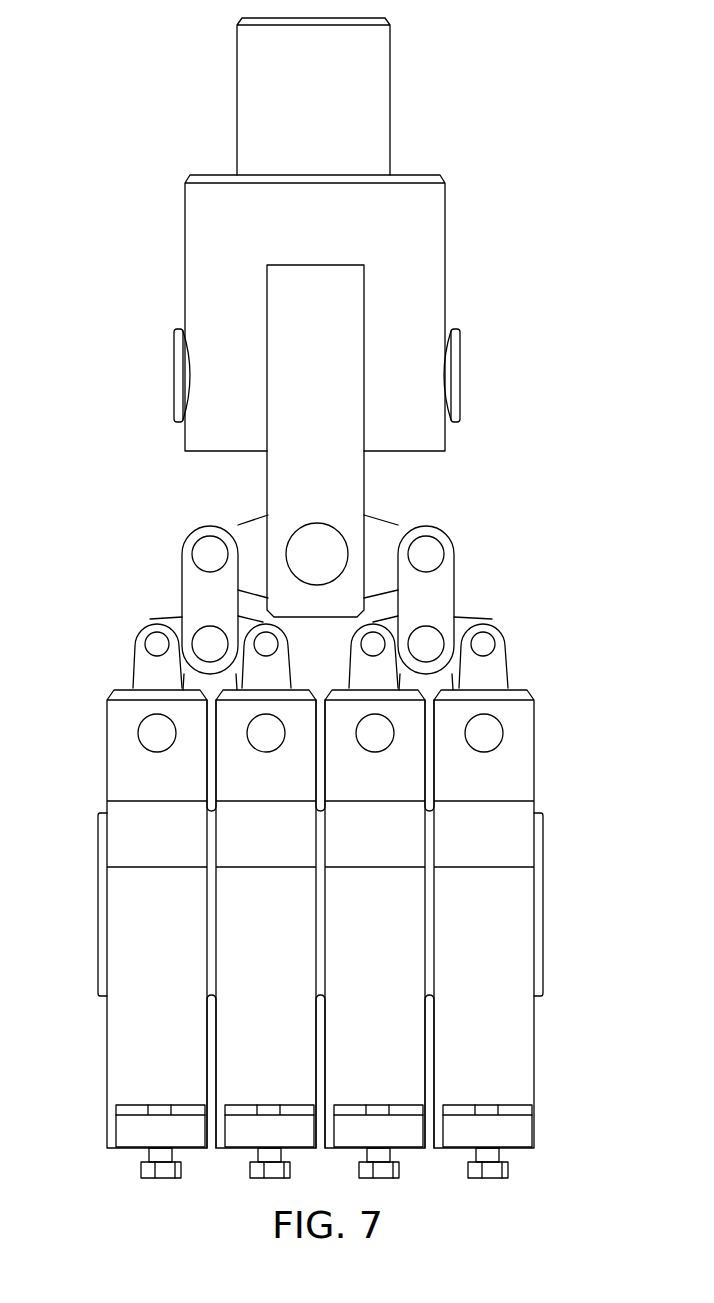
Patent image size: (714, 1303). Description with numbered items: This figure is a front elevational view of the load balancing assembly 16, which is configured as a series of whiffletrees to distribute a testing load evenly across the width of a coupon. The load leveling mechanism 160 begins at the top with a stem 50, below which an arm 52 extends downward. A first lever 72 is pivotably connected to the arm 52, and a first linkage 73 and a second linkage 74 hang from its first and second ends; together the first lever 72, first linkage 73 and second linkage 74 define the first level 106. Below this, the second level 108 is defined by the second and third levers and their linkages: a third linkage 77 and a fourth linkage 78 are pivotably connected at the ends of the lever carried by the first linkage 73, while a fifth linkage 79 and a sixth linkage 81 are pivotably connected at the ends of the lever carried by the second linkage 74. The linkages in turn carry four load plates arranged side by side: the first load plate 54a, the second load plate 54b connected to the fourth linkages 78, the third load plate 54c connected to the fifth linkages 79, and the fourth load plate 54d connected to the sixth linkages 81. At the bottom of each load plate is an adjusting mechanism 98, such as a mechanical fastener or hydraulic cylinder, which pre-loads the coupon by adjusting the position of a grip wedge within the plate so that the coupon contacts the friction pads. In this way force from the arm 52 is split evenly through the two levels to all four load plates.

The load balancing assembly 16 is at (558, 88).
The stem 50 is at (390, 98).
The arm 52 is at (366, 482).
The first lever 72 is at (246, 528).
The first linkage 73 is at (188, 590).
The second linkage 74 is at (446, 588).
The third linkage 77 is at (143, 668).
The fourth linkage 78 is at (282, 667).
The fifth linkage 79 is at (356, 658).
The sixth linkage 81 is at (498, 668).
The first level 106 is at (492, 507).
The second level 108 is at (570, 631).
The load leveling mechanism 160 is at (172, 611).
The first load plate 54a is at (116, 1025).
The second load plate 54b is at (218, 1025).
The third load plate 54c is at (426, 1025).
The fourth load plate 54d is at (532, 1025).
The adjusting mechanism 98 is at (181, 1170).